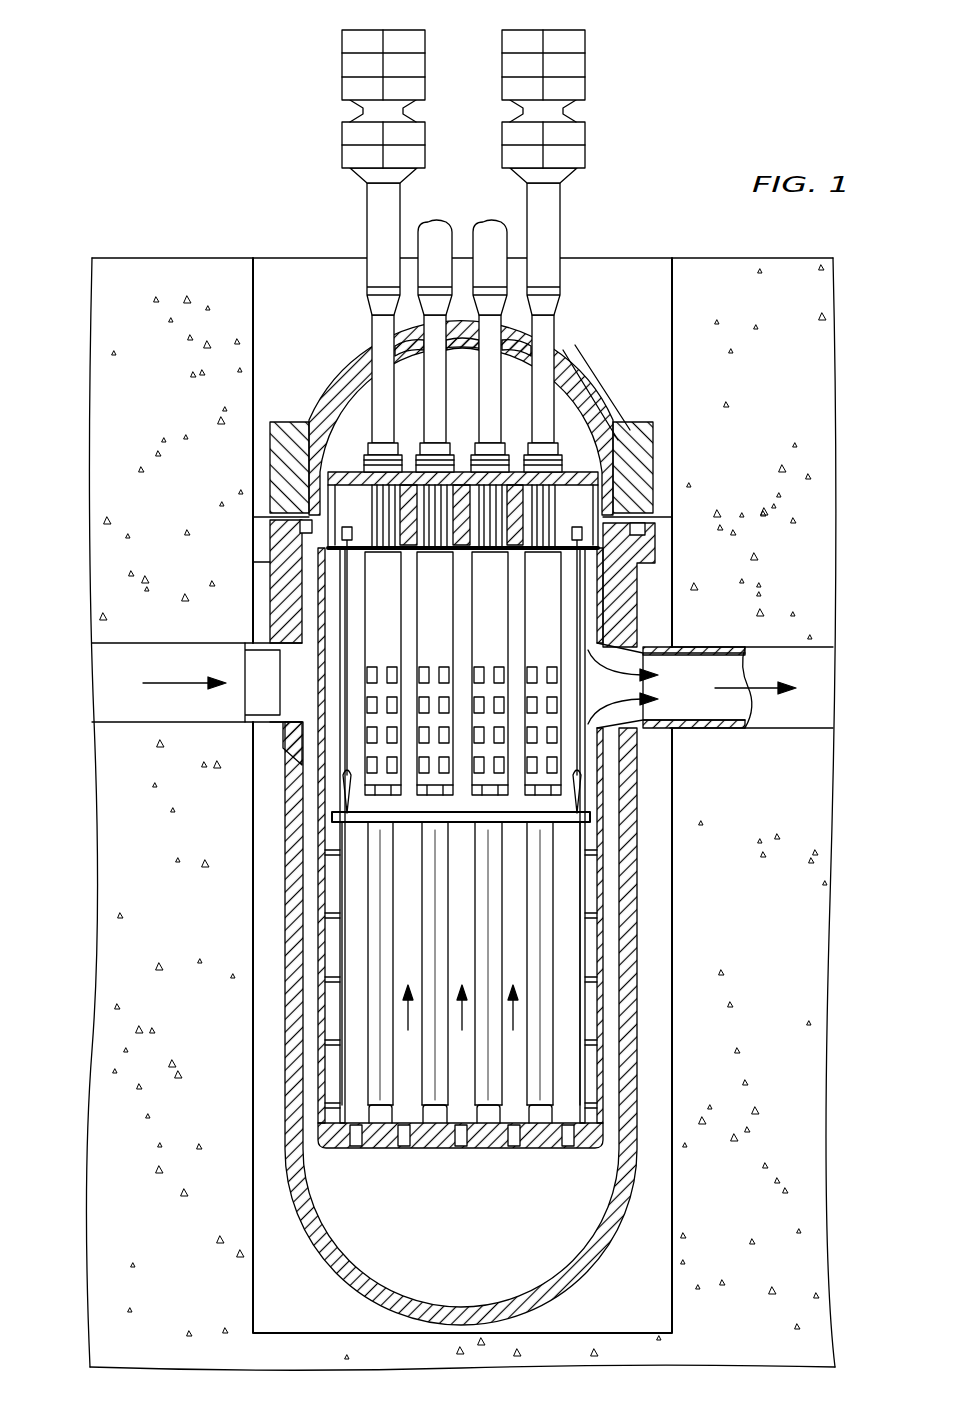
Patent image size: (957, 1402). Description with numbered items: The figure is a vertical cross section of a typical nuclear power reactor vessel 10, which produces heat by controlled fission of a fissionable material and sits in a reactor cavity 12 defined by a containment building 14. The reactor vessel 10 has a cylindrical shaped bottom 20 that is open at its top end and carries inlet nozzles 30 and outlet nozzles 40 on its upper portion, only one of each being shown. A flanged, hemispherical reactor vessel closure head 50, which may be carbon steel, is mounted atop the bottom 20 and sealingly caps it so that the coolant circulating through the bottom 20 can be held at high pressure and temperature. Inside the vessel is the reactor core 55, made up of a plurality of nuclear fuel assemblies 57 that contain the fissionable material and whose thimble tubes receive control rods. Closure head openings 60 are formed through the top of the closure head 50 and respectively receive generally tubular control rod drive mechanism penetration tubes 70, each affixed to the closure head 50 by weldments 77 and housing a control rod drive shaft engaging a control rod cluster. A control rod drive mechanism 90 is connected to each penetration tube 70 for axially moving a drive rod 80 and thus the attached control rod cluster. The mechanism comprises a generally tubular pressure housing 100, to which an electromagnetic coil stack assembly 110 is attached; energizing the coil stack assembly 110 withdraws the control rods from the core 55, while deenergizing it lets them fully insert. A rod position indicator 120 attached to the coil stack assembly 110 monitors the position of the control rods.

The reactor vessel 10 is at (285, 168).
The reactor cavity 12 is at (253, 283).
The containment building 14 is at (165, 277).
The bottom 20 is at (638, 825).
The inlet nozzle 30 is at (272, 640).
The outlet nozzle 40 is at (645, 646).
The reactor vessel closure head 50 is at (340, 382).
The reactor core 55 is at (572, 1018).
The nuclear fuel assembly 57 is at (538, 1085).
The closure head opening 60 is at (552, 345).
The control rod drive mechanism penetration tube 70 is at (545, 320).
The weldment 77 is at (467, 348).
The drive rod 80 is at (577, 428).
The control rod drive mechanism 90 is at (572, 240).
The pressure housing 100 is at (428, 253).
The electromagnetic coil stack assembly 110 is at (575, 135).
The rod position indicator 120 is at (585, 63).